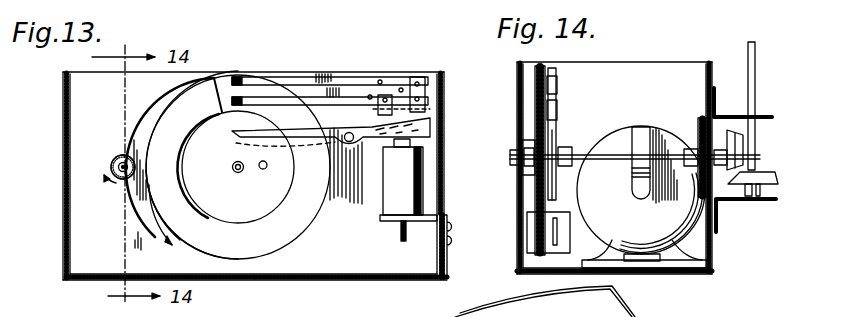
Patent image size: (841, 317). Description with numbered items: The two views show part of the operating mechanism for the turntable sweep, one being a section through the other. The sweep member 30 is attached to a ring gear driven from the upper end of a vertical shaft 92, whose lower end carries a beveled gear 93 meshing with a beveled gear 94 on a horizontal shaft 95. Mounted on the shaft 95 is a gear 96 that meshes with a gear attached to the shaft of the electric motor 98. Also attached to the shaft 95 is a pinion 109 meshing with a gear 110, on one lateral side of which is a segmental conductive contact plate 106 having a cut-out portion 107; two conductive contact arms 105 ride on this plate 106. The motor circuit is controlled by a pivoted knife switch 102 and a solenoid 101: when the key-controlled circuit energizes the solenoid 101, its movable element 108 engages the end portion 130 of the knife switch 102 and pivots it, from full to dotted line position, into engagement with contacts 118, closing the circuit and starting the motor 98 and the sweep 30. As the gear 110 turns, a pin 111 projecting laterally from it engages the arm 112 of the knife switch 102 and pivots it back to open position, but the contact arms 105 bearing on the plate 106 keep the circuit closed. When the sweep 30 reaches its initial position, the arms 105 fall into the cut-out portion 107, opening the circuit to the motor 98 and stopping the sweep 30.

In FIG. 14, the sweep member 30 is at (640, 315).
In FIG. 14, the vertical shaft 92 is at (755, 83).
In FIG. 14, the beveled gear 93 is at (770, 185).
In FIG. 14, the beveled gear 94 is at (723, 153).
In FIG. 13, the horizontal shaft 95 is at (122, 153).
In FIG. 14, the horizontal shaft 95 is at (604, 157).
In FIG. 14, the gear 96 is at (700, 117).
In FIG. 14, the electric motor 98 is at (693, 232).
In FIG. 13, the solenoid 101 is at (413, 178).
In FIG. 14, the solenoid 101 is at (565, 150).
In FIG. 13, the pivoted knife switch 102 is at (350, 150).
In FIG. 13, the contact arms 105 is at (287, 98).
In FIG. 13, the segmental conductive contact plate 106 is at (278, 232).
In FIG. 13, the cut-out portion 107 is at (218, 92).
In FIG. 13, the movable element 108 is at (402, 233).
In FIG. 13, the pinion 109 is at (115, 165).
In FIG. 14, the pinion 109 is at (535, 172).
In FIG. 13, the gear 110 is at (203, 243).
In FIG. 14, the gear 110 is at (538, 228).
In FIG. 13, the pin 111 is at (264, 169).
In FIG. 13, the arm 112 is at (270, 137).
In FIG. 13, the contacts 118 is at (425, 100).
In FIG. 13, the end portion 130 is at (430, 128).